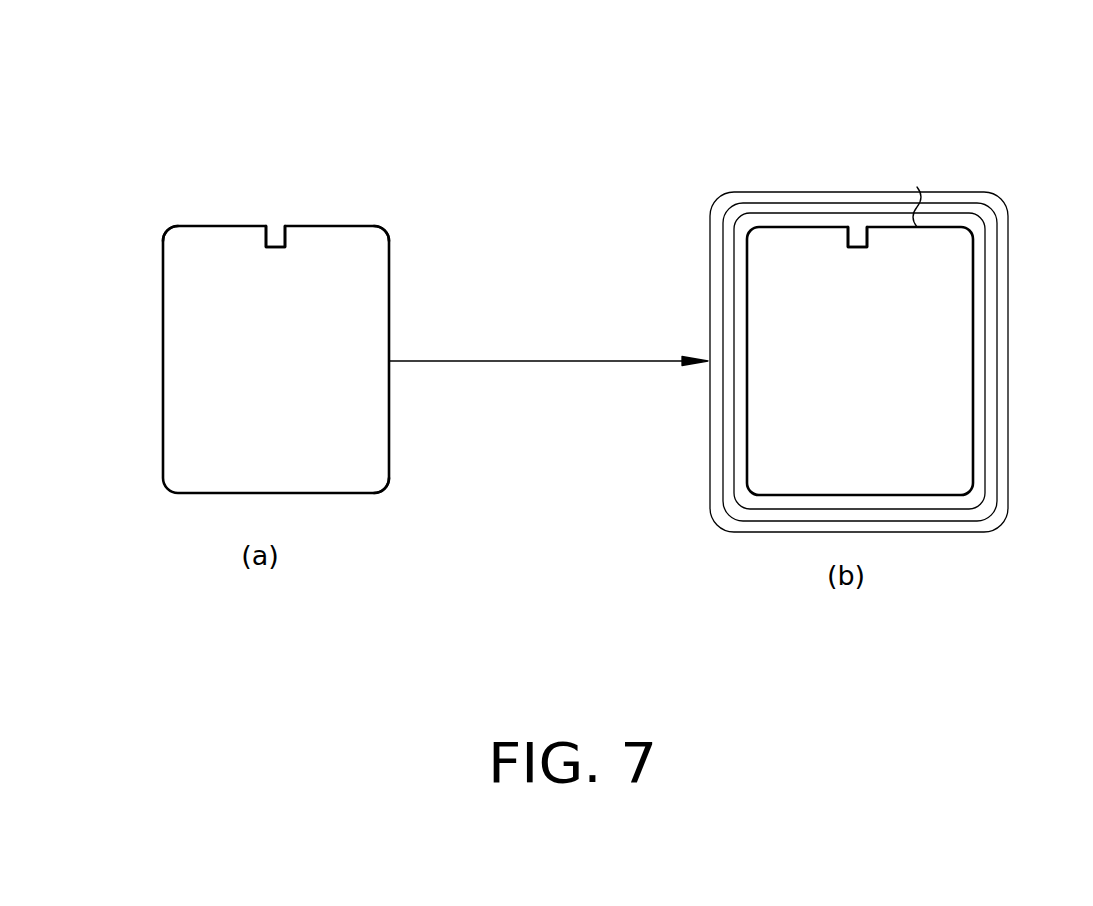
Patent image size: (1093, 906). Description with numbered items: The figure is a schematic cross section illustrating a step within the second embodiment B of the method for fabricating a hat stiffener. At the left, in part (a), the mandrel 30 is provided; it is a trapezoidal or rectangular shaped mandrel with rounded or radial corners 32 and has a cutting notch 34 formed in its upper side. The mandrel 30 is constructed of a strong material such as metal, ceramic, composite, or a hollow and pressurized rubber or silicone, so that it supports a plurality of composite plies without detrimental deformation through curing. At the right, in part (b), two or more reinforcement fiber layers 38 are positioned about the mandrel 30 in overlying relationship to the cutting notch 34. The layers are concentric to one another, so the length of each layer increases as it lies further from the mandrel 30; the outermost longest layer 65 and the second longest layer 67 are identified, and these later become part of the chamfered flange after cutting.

The mandrel 30 is at (318, 203).
The rounded or radial corners 32 is at (163, 237).
The cutting notch 34 is at (275, 228).
The reinforcement fiber layers 38 is at (930, 208).
The longest layer 65 is at (878, 190).
The second longest layer 67 is at (770, 202).
The second embodiment B is at (308, 105).